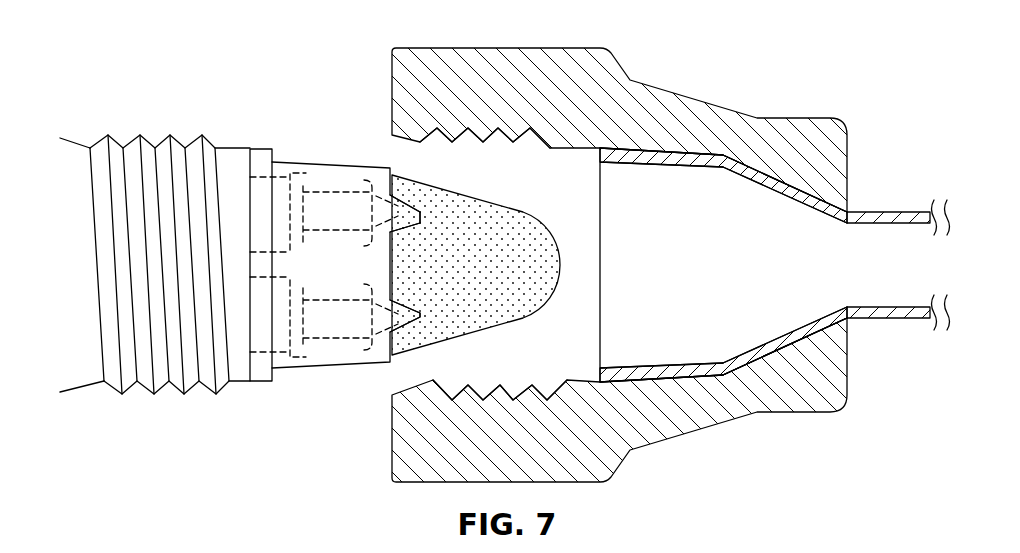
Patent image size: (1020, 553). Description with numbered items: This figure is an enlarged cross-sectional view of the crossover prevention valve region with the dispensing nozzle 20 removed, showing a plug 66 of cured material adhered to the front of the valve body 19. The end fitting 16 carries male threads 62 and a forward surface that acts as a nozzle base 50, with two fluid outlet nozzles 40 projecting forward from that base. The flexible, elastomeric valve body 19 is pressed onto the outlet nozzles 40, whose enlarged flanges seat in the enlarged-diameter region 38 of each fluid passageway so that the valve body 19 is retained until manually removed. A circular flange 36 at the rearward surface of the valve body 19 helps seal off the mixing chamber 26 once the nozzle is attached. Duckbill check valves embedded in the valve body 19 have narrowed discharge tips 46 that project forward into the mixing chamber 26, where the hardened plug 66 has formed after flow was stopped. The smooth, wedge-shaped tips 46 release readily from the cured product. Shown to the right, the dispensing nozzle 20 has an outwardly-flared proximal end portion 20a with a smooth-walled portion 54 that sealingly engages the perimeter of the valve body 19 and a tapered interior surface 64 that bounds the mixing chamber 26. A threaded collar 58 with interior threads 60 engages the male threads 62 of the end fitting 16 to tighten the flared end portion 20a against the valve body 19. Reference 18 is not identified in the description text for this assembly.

The end fitting 16 is at (196, 263).
The male threads 62 is at (157, 137).
The fluid outlet nozzles 40 is at (273, 263).
The nozzle base 50 is at (262, 267).
The valve body 19 is at (464, 233).
The circular flange 36 is at (354, 233).
The discharge tips 46 is at (408, 210).
The enlarged-diameter region 38 is at (298, 173).
The plug 66 is at (560, 268).
The housing assembly 18 is at (647, 276).
The threaded collar 58 is at (619, 276).
The interior threads 60 is at (496, 164).
The outwardly-flared proximal end portion 20a is at (750, 276).
The smooth-walled portion 54 is at (677, 163).
The tapered interior surface 64 is at (770, 185).
The mixing chamber 26 is at (827, 290).
The dispensing nozzle 20 is at (888, 212).